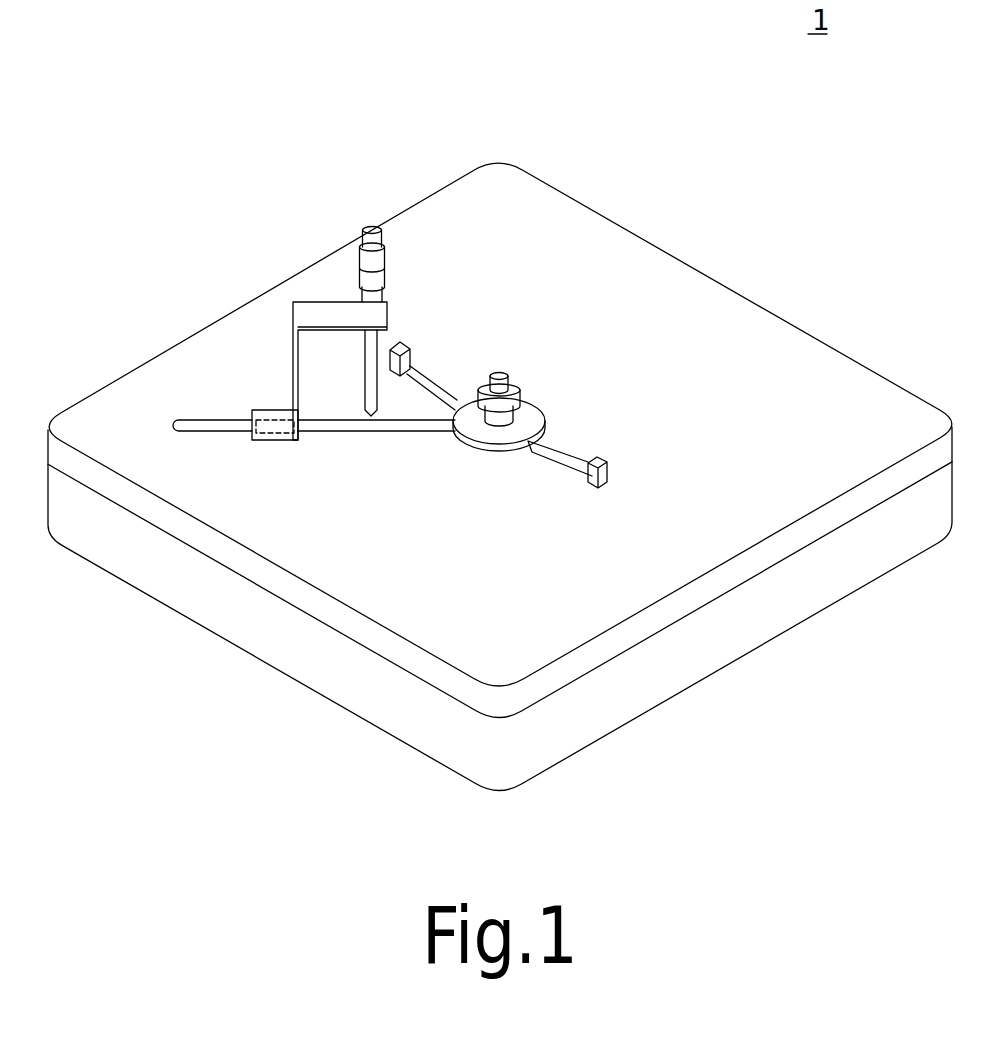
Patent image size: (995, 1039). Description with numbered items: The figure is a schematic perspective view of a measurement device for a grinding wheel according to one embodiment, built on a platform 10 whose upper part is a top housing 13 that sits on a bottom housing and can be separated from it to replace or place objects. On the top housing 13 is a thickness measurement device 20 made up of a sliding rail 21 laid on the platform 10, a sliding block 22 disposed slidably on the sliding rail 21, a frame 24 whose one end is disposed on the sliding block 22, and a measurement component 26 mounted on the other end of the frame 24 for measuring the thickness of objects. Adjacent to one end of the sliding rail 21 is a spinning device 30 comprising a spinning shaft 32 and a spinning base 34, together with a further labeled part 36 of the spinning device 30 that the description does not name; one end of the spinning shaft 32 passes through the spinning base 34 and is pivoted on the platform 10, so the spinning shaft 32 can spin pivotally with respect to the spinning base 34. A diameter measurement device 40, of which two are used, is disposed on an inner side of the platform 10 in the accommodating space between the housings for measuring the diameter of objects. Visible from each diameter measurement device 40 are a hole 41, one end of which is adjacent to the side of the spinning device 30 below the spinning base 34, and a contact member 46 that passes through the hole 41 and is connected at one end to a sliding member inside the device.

The platform 10 is at (500, 458).
The top housing 13 is at (707, 274).
The thickness measurement device 20 is at (271, 301).
The sliding rail 21 is at (173, 426).
The sliding block 22 is at (270, 414).
The frame 24 is at (293, 390).
The measurement component 26 is at (357, 240).
The spinning device 30 is at (573, 349).
The spinning shaft 32 is at (492, 372).
The spinning base 34 is at (547, 407).
The hub 36 is at (517, 383).
The diameter measurement device 40 is at (545, 428).
The hole 41 is at (442, 383).
The contact member 46 is at (404, 345).